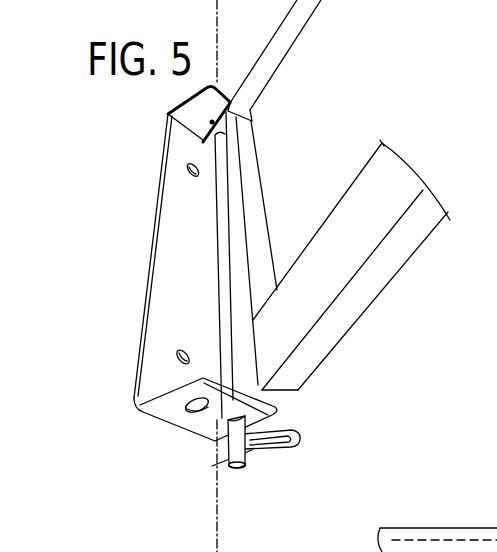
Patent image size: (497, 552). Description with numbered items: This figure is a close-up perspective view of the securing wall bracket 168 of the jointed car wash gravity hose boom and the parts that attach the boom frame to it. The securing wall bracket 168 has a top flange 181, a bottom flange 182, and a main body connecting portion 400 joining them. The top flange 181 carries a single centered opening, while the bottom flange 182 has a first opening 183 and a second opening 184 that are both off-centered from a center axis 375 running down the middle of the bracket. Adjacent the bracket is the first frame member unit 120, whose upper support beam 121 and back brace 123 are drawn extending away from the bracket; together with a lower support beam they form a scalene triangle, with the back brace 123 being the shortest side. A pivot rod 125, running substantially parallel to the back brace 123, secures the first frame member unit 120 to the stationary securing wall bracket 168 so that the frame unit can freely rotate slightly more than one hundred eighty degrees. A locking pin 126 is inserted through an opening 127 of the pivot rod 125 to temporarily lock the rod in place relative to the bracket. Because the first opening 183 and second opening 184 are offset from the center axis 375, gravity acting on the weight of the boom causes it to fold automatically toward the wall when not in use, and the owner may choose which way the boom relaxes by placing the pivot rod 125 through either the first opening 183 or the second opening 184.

The first frame member unit 120 is at (425, 225).
The upper support beam 121 is at (350, 1).
The back brace 123 is at (260, 232).
The pivot rod 125 is at (220, 177).
The locking pin 126 is at (293, 437).
The opening 127 is at (243, 468).
The securing wall bracket 168 is at (162, 287).
The top flange 181 is at (180, 116).
The bottom flange 182 is at (172, 412).
The first opening 183 is at (197, 410).
The second opening 184 is at (303, 389).
The center axis 375 is at (218, 503).
The main body connecting portion 400 is at (172, 252).